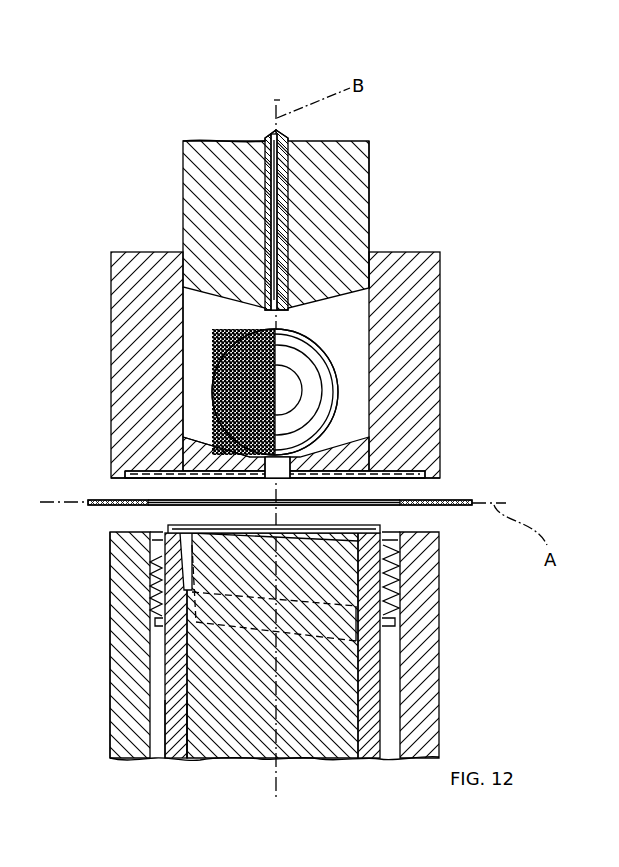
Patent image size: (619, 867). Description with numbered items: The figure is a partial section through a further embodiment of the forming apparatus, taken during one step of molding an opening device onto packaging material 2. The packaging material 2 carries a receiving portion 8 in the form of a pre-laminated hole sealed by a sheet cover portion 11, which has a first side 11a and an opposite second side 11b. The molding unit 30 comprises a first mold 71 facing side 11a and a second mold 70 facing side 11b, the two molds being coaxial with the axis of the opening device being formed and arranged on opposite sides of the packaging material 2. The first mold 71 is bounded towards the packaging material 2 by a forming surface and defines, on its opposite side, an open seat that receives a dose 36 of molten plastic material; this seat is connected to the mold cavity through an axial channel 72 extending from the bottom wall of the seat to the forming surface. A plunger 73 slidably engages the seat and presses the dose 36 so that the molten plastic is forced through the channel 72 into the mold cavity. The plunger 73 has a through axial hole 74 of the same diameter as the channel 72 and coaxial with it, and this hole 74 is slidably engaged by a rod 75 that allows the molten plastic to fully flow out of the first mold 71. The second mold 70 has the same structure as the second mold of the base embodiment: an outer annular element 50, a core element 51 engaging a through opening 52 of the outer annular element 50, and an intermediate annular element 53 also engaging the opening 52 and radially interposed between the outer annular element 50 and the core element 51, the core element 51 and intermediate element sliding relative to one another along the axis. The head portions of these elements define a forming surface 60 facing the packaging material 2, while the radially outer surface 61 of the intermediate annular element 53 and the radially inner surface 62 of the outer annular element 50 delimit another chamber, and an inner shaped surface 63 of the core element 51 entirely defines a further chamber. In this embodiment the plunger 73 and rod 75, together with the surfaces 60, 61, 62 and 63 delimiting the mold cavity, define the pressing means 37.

The plunger 73 is at (222, 160).
The through axial hole 74 is at (277, 178).
The rod 75 is at (282, 222).
The pressing means 37 is at (380, 233).
The first mold 71 is at (452, 328).
The axial channel 72 is at (302, 455).
The receiving portion 8 is at (380, 478).
The forming surface 60 is at (272, 466).
The dose 36 is at (314, 378).
The packaging material 2 is at (449, 496).
The sheet cover portion 11 is at (146, 496).
The side of cover portion 11a is at (175, 496).
The side of cover portion 11b is at (393, 507).
The molding unit 30 is at (96, 730).
The second mold 70 is at (382, 777).
The outer annular element 50 is at (414, 643).
The radially outer surface 61 is at (394, 580).
The through opening 52 is at (173, 670).
The intermediate annular element 53 is at (170, 726).
The core element 51 is at (334, 703).
The radially inner surface 62 is at (172, 595).
The inner shaped surface 63 is at (246, 597).